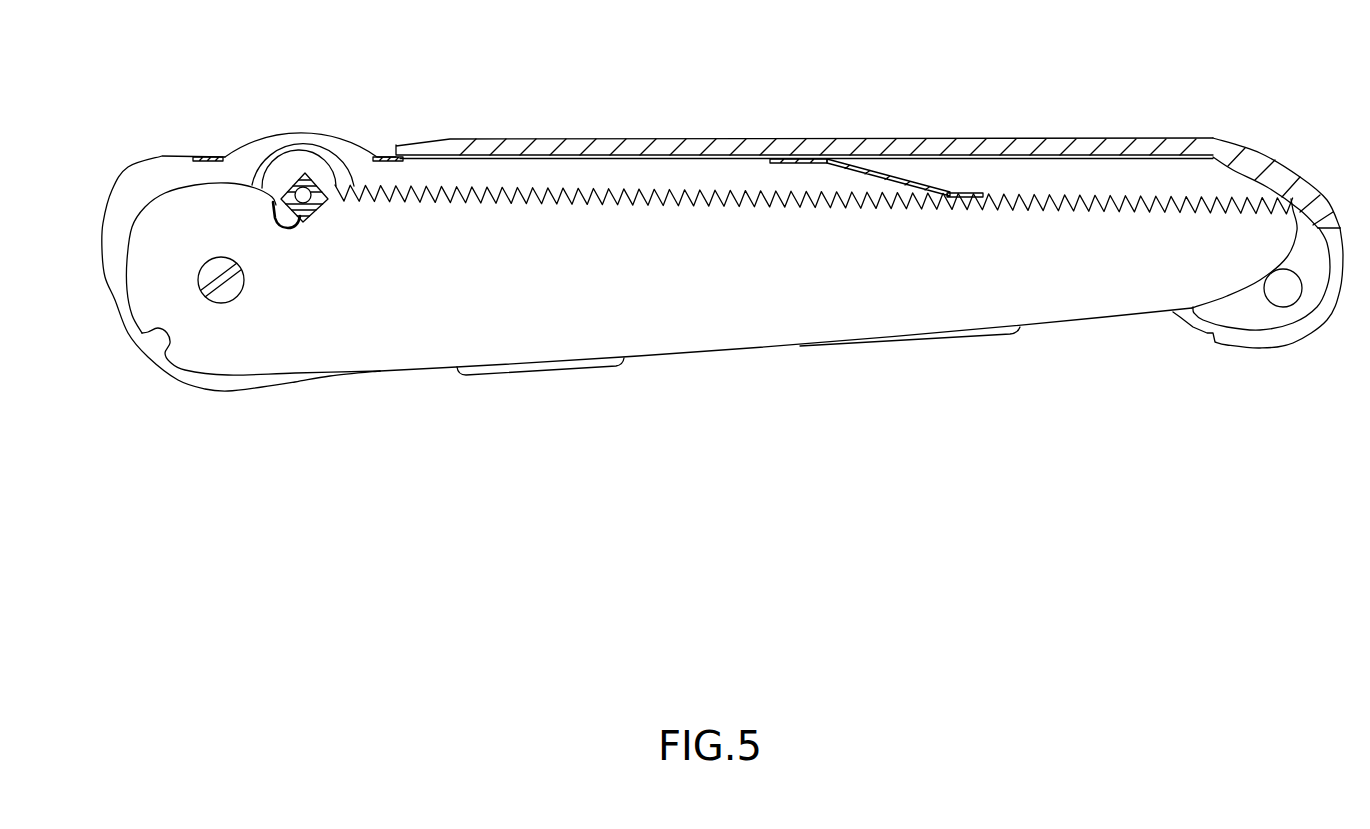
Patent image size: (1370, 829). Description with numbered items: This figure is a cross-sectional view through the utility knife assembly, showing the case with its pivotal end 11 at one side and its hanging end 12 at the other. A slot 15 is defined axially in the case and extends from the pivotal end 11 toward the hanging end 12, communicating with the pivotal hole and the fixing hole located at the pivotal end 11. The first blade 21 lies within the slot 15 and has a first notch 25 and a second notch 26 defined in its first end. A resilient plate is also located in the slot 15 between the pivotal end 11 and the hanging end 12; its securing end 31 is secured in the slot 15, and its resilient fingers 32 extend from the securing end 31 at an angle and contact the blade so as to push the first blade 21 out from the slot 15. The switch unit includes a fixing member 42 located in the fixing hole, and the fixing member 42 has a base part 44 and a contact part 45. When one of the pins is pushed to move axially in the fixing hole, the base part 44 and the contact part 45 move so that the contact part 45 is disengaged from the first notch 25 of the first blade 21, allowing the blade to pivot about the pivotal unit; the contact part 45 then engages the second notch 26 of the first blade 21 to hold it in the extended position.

The pivotal end 11 is at (158, 153).
The hanging end 12 is at (1290, 350).
The slot 15 is at (1083, 185).
The first blade 21 is at (1082, 306).
The first notch 25 is at (298, 222).
The second notch 26 is at (155, 343).
The securing end 31 is at (790, 158).
The resilient fingers 32 is at (913, 183).
The fixing member 42 is at (318, 184).
The base part 44 is at (303, 170).
The contact part 45 is at (273, 210).